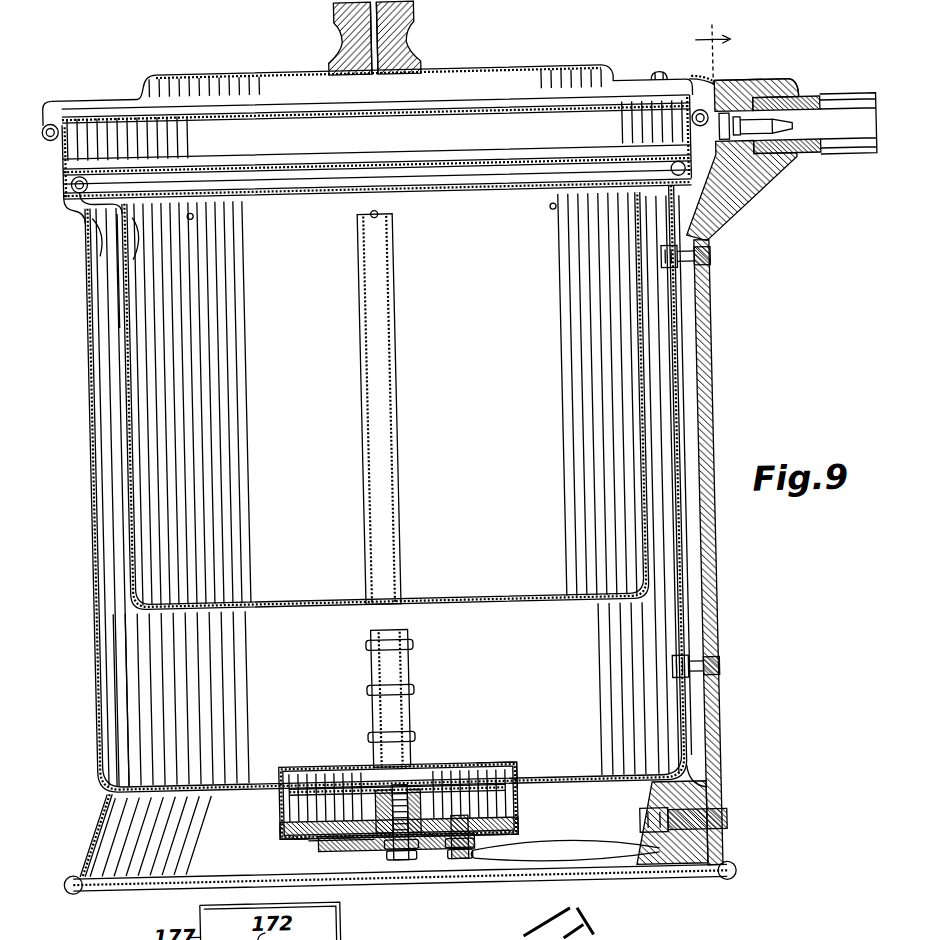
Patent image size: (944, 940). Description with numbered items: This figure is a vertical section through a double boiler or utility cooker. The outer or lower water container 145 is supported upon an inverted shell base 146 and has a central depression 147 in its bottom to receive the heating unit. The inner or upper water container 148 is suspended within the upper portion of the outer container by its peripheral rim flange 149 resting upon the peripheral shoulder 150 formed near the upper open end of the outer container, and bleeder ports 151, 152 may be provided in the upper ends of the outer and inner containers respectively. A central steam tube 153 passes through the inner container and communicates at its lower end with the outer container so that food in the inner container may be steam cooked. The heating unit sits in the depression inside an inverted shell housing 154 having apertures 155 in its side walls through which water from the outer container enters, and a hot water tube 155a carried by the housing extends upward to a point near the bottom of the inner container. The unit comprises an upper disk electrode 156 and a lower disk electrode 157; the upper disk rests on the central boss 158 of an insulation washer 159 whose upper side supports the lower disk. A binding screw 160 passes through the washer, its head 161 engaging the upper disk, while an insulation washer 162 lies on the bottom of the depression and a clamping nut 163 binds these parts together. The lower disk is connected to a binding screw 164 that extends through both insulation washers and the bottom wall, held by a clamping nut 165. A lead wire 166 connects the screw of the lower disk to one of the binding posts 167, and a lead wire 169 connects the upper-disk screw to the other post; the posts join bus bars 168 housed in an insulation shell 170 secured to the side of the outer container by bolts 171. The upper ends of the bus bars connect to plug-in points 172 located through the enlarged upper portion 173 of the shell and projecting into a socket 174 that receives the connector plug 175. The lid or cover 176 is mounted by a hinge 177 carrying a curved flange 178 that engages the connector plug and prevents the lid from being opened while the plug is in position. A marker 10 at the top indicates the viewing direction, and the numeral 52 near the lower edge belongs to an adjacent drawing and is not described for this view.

The section line 10 is at (620, 864).
The connector 52 is at (568, 918).
The outer or lower water container 145 is at (91, 686).
The inverted shell base 146 is at (88, 830).
The central depression 147 is at (272, 829).
The inner or upper water container 148 is at (545, 610).
The peripheral rim flange 149 is at (92, 232).
The peripheral shoulder 150 is at (84, 196).
The bleeder port 151 is at (102, 256).
The bleeder port 152 is at (126, 292).
The central steam tube 153 is at (399, 433).
The inverted shell housing 154 is at (494, 776).
The apertures 155 is at (272, 796).
The hot water tube 155a is at (405, 650).
The upper disk electrode 156 is at (338, 788).
The lower disk electrode 157 is at (300, 840).
The central boss 158 is at (427, 818).
The insulation washer 159 is at (345, 840).
The binding screw 160 is at (410, 798).
The head 161 is at (385, 790).
The insulation washer 162 is at (384, 850).
The clamping nut 163 is at (410, 862).
The binding screw 164 is at (456, 818).
The clamping nut 165 is at (458, 860).
The lead wire 166 is at (560, 846).
The binding posts 167 is at (719, 826).
The bus bars 168 is at (686, 610).
The lead wire 169 is at (546, 862).
The insulation shell 170 is at (714, 406).
The bolts 171 is at (716, 262).
The plug-in points 172 is at (802, 96).
The enlarged upper portion 173 is at (765, 168).
The socket 174 is at (782, 164).
The connector plug 175 is at (862, 162).
The lid or cover 176 is at (150, 86).
The hinge 177 is at (716, 86).
The curved flange 178 is at (792, 86).